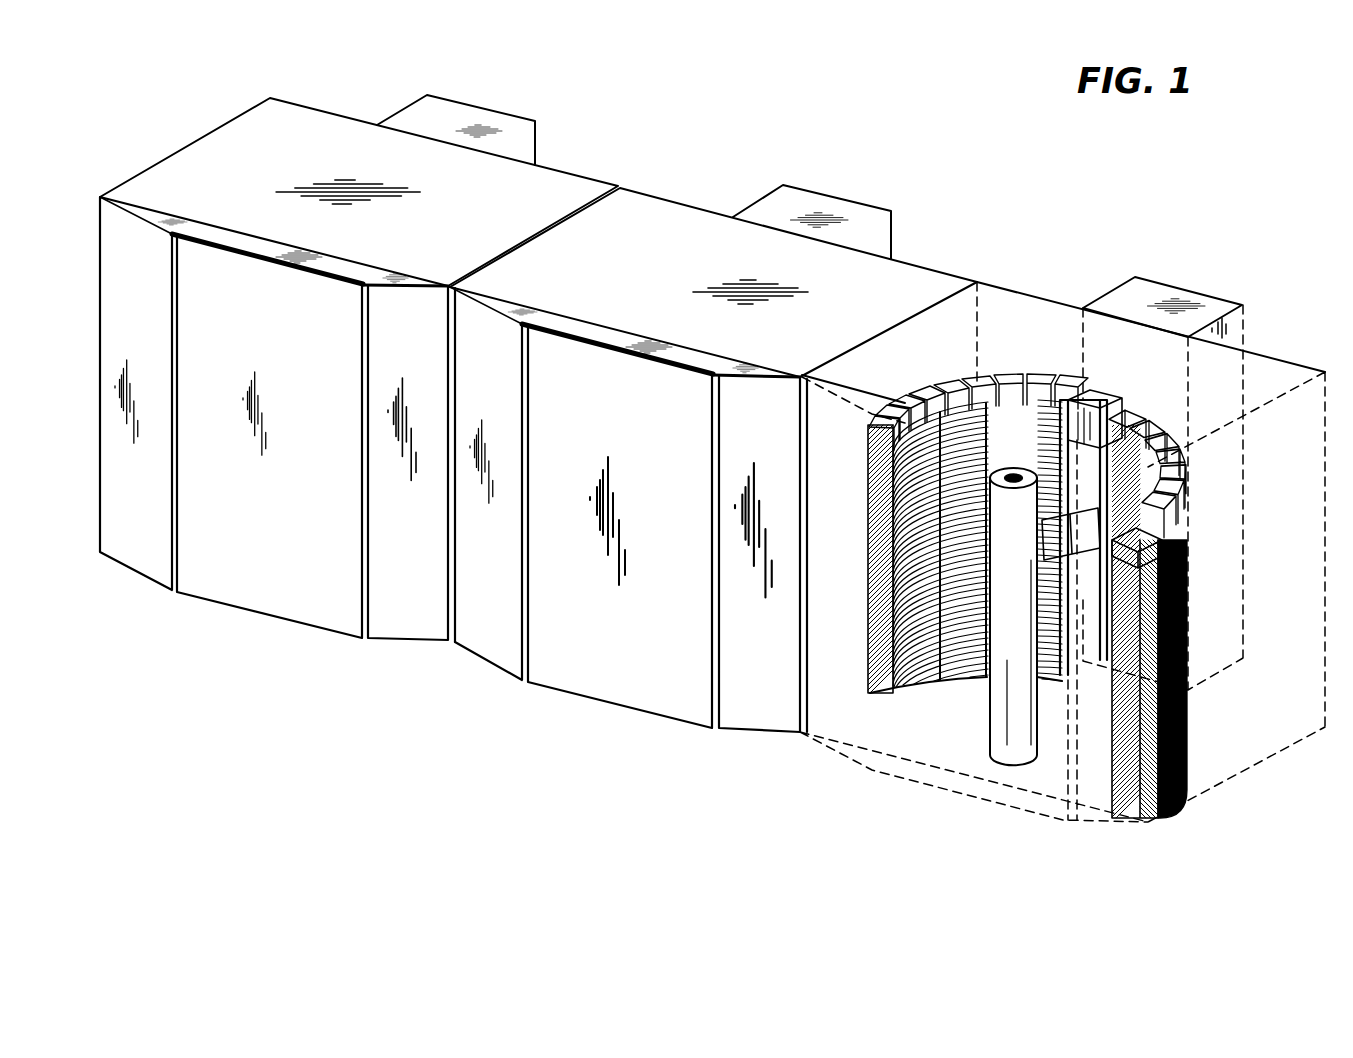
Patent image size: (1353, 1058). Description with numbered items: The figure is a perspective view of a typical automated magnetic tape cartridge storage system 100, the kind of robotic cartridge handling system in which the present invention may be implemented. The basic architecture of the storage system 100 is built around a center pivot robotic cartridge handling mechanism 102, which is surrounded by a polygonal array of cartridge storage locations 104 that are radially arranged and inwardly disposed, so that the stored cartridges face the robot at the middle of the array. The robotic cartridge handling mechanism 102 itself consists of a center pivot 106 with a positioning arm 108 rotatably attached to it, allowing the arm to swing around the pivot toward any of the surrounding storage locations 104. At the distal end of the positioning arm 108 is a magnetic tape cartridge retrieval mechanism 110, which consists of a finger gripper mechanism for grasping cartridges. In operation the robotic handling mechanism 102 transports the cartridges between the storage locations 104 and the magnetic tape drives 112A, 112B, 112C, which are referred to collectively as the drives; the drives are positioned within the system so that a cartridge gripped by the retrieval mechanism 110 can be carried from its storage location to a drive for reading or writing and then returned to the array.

The automated magnetic tape cartridge storage system 100 is at (1120, 217).
The robotic cartridge handling mechanism 102 is at (966, 753).
The cartridge storage locations 104 is at (1168, 433).
The center pivot 106 is at (990, 712).
The positioning arm 108 is at (1127, 613).
The magnetic tape cartridge retrieval mechanism 110 is at (1188, 480).
The magnetic tape drive 112A is at (1103, 397).
The magnetic tape drive 112B is at (1153, 420).
The magnetic tape drive 112C is at (1180, 557).